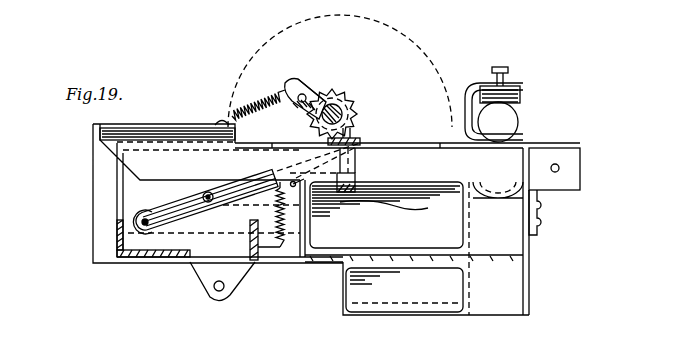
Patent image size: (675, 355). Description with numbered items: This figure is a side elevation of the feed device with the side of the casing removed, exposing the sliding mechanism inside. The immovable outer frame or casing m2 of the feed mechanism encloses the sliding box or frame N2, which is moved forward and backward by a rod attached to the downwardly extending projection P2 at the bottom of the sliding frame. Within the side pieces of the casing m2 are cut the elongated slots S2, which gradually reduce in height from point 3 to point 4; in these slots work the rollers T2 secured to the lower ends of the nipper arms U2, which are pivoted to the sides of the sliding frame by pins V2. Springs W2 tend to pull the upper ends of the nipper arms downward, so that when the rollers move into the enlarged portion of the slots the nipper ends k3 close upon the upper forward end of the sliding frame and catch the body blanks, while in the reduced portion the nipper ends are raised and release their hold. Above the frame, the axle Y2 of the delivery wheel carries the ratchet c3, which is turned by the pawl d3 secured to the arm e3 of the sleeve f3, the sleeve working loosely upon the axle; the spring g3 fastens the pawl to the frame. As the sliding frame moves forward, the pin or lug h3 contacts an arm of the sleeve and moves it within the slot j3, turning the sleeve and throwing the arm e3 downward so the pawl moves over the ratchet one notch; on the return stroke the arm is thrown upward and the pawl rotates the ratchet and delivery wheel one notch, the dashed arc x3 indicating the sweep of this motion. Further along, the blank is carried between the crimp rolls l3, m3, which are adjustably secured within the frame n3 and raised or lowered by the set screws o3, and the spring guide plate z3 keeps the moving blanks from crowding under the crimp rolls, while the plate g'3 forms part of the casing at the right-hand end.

The path of arm swing (dashed arc) x3 is at (385, 40).
The spring g3 is at (240, 105).
The arm e3 is at (286, 86).
The pawl d3 is at (311, 97).
The ratchet c3 is at (352, 102).
The axle Y2 is at (323, 118).
The nipper ends k3 is at (358, 137).
The slot j3 is at (358, 180).
The sleeve f3 is at (372, 166).
The spring guide plate z3 is at (468, 94).
The frame n3 is at (520, 93).
The crimp roll m3 is at (512, 122).
The set screws o3 is at (509, 69).
The plate g'3 is at (571, 169).
The crimp roll l3 is at (498, 193).
The elongated slots S2 is at (386, 215).
The point 3 is at (379, 200).
The point 4 is at (421, 205).
The nipper arms U2 is at (207, 200).
The pins V2 is at (208, 191).
The rollers T2 is at (140, 218).
The springs W2 is at (277, 200).
The pin or lug h3 is at (297, 186).
The sliding box or frame N2 is at (140, 187).
The outer frame or casing m2 is at (117, 259).
The projection P2 is at (208, 284).